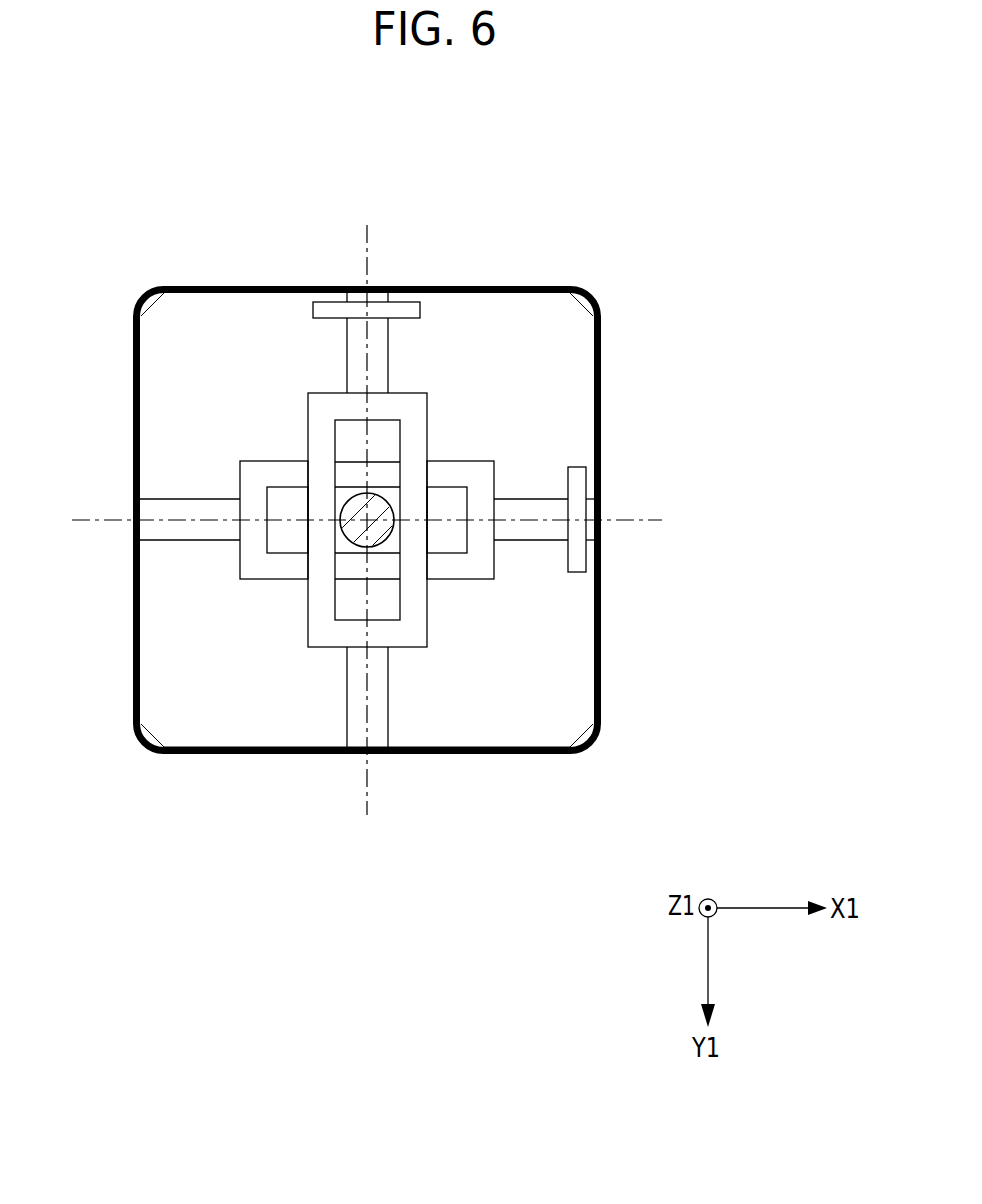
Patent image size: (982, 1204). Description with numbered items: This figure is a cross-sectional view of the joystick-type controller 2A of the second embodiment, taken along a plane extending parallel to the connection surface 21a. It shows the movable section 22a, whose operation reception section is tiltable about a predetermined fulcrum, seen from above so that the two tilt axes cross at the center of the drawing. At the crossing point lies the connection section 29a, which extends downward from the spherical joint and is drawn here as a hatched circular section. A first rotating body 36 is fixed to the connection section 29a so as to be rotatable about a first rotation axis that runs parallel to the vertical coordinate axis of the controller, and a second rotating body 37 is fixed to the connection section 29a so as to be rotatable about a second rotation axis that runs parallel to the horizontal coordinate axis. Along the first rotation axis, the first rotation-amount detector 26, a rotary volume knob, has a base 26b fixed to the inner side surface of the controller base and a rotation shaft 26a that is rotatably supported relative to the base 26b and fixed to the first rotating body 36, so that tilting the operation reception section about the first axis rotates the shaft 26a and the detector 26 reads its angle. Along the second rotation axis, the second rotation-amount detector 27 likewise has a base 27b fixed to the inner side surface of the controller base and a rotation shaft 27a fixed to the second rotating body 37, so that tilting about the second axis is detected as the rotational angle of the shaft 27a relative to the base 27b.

The controller 2A is at (606, 212).
The connection surface 21a is at (488, 754).
The movable section 22a is at (158, 361).
The first rotation-amount detector 26 is at (525, 241).
The rotation shaft 26a is at (388, 328).
The base 26b is at (402, 302).
The second rotation-amount detector 27 is at (675, 360).
The rotation shaft 27a is at (557, 498).
The base 27b is at (587, 485).
The connection section 29a is at (346, 530).
The first rotating body 36 is at (308, 426).
The second rotating body 37 is at (461, 581).